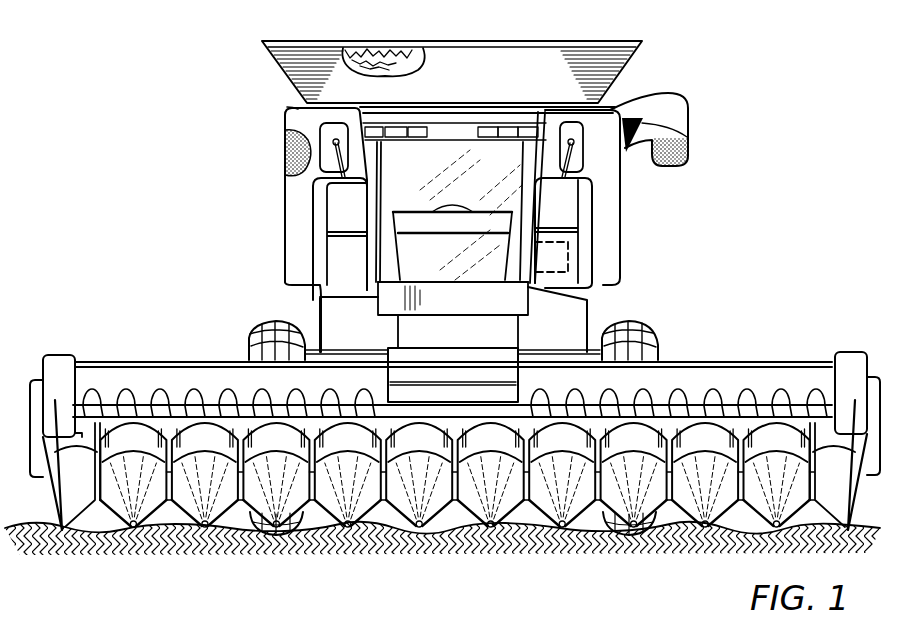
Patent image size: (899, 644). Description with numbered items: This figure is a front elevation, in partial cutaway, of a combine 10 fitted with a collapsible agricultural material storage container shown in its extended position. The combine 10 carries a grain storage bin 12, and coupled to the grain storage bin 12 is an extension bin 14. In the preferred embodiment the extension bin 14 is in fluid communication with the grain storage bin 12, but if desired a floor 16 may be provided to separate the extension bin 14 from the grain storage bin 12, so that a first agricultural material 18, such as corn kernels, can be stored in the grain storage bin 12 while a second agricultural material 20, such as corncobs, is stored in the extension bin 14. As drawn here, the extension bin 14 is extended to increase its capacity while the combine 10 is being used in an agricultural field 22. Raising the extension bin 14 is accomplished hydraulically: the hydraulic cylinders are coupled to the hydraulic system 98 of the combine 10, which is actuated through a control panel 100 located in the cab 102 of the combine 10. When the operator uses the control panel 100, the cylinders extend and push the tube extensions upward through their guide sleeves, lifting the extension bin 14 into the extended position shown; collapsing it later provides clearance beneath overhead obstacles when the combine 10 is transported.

The combine 10 is at (228, 129).
The grain storage bin 12 is at (293, 213).
The extension bin 14 is at (266, 86).
The floor 16 is at (313, 118).
The first agricultural material 18 is at (287, 155).
The second agricultural material 20 is at (283, 62).
The agricultural field 22 is at (107, 540).
The hydraulic system 98 is at (568, 247).
The control panel 100 is at (393, 215).
The cab 102 is at (370, 253).